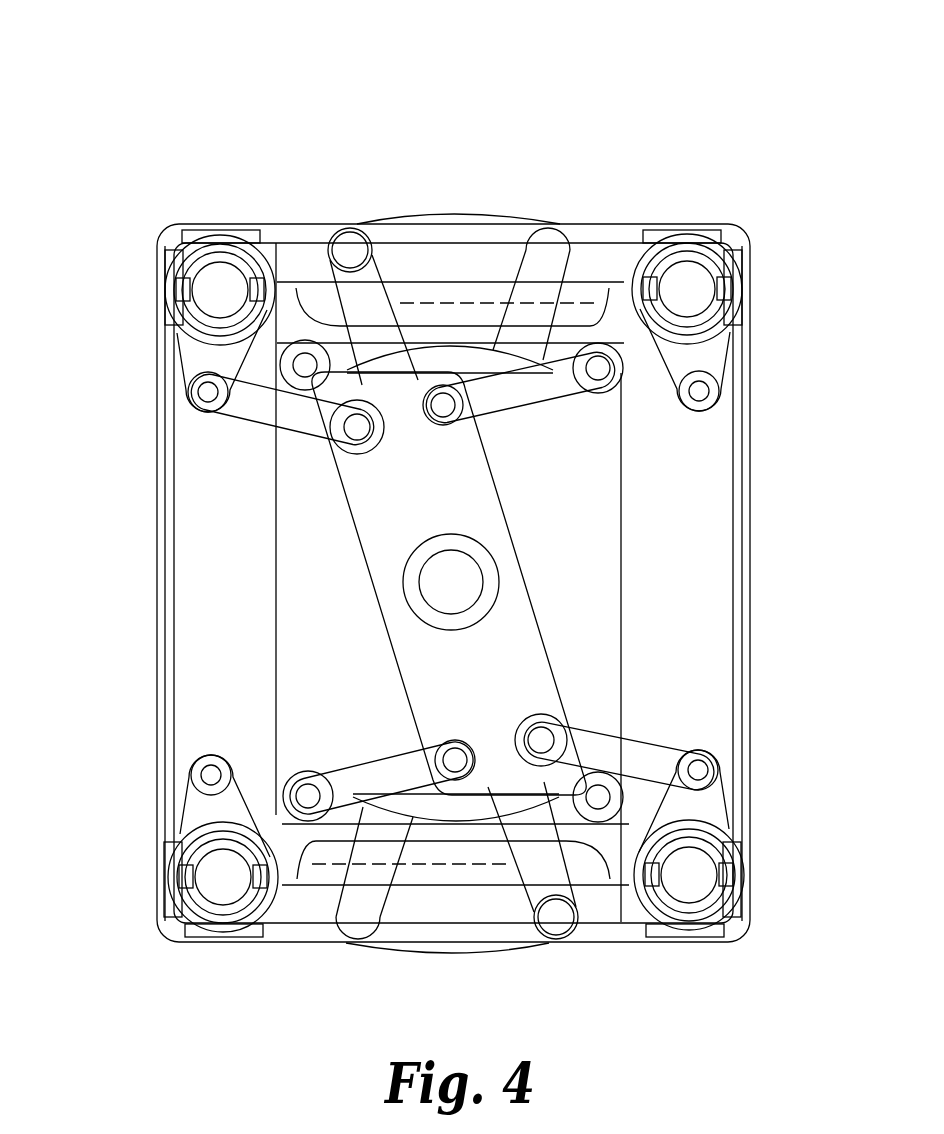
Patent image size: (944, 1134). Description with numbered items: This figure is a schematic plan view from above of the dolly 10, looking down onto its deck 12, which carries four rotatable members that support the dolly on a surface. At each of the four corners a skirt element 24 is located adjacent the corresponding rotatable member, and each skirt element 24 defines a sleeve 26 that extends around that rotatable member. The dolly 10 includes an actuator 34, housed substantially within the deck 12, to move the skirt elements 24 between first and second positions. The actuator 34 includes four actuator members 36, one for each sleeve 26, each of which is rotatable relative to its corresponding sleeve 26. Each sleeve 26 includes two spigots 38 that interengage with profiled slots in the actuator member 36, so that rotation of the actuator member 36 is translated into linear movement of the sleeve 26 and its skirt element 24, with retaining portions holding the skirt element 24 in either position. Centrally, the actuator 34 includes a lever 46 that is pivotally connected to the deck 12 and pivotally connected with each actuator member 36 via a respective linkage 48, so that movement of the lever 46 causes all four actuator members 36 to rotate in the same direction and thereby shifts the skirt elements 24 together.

The dolly 10 is at (155, 180).
The deck 12 is at (157, 609).
The skirt element 24 is at (220, 238).
The sleeve 26 is at (163, 317).
The actuator 34 is at (566, 562).
The actuator member 36 is at (183, 267).
The spigot 38 is at (228, 305).
The lever 46 is at (522, 665).
The linkage 48 is at (526, 394).